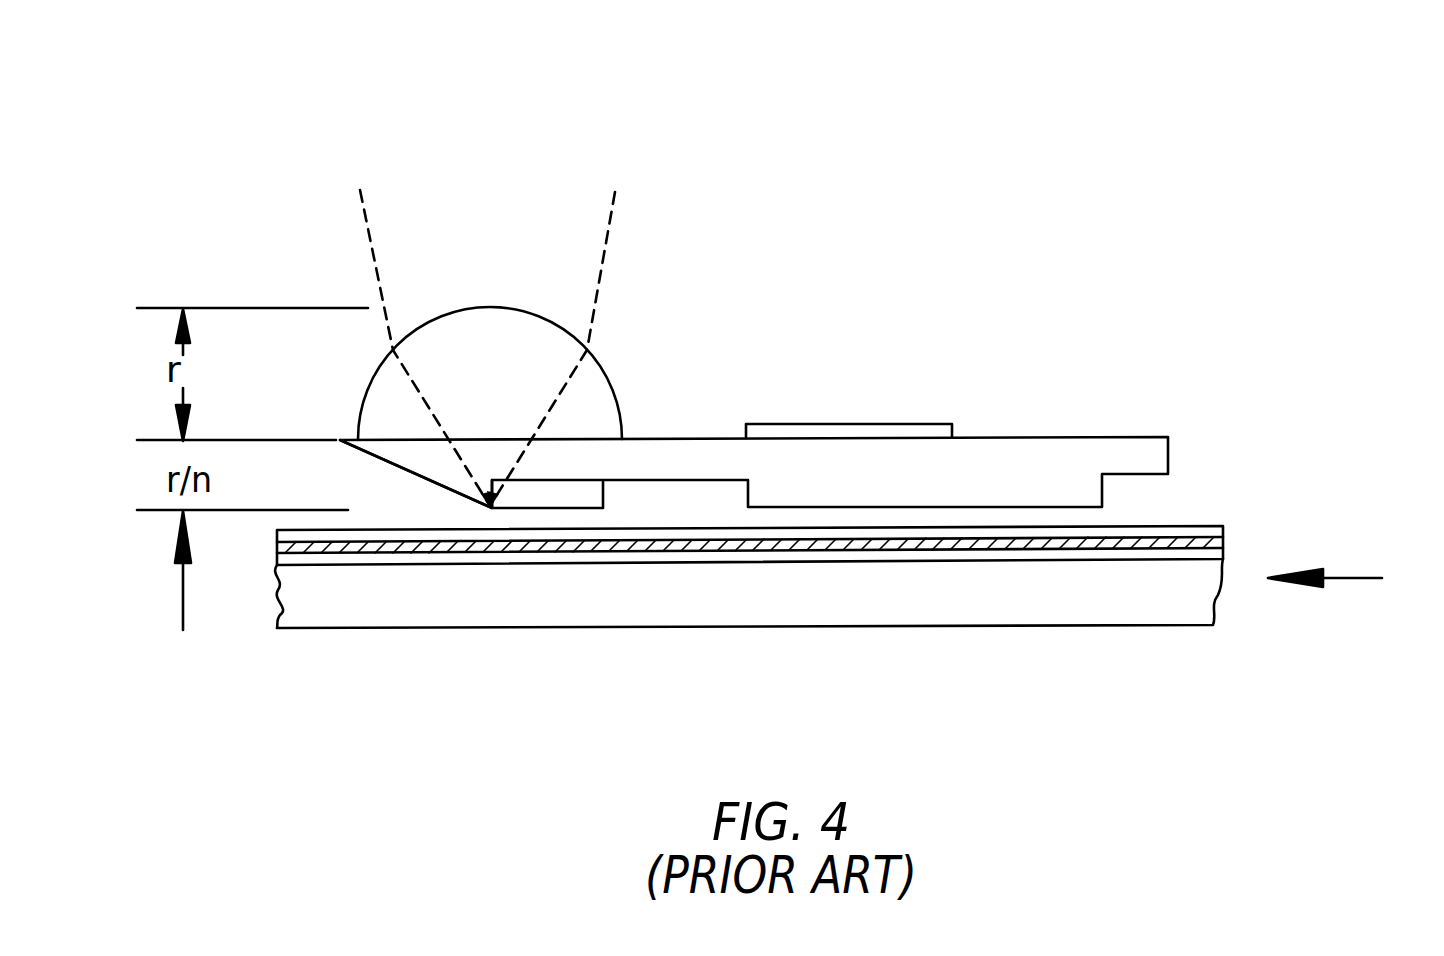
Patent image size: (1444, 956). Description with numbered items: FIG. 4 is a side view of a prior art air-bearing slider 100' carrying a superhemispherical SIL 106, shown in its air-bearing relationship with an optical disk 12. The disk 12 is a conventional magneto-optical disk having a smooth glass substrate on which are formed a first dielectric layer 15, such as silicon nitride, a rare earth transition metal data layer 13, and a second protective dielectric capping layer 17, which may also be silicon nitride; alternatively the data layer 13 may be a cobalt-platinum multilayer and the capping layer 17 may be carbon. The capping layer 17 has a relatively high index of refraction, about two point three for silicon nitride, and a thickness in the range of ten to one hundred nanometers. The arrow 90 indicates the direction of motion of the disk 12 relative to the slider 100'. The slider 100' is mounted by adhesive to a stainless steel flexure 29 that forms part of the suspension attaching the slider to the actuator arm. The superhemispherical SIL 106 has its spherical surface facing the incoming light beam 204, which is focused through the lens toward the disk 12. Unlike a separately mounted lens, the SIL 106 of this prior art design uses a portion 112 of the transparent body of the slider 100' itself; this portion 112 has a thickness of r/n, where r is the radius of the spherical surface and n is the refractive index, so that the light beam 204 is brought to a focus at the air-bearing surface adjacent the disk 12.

The disk 12 is at (1092, 625).
The data layer 13 is at (1223, 542).
The first dielectric layer 15 is at (275, 563).
The capping layer 17 is at (275, 538).
The flexure 29 is at (862, 423).
The arrow 90 is at (1335, 578).
The slider 100' is at (754, 399).
The superhemispherical SIL 106 is at (587, 418).
The portion 112 is at (407, 452).
The light beam 204 is at (612, 218).